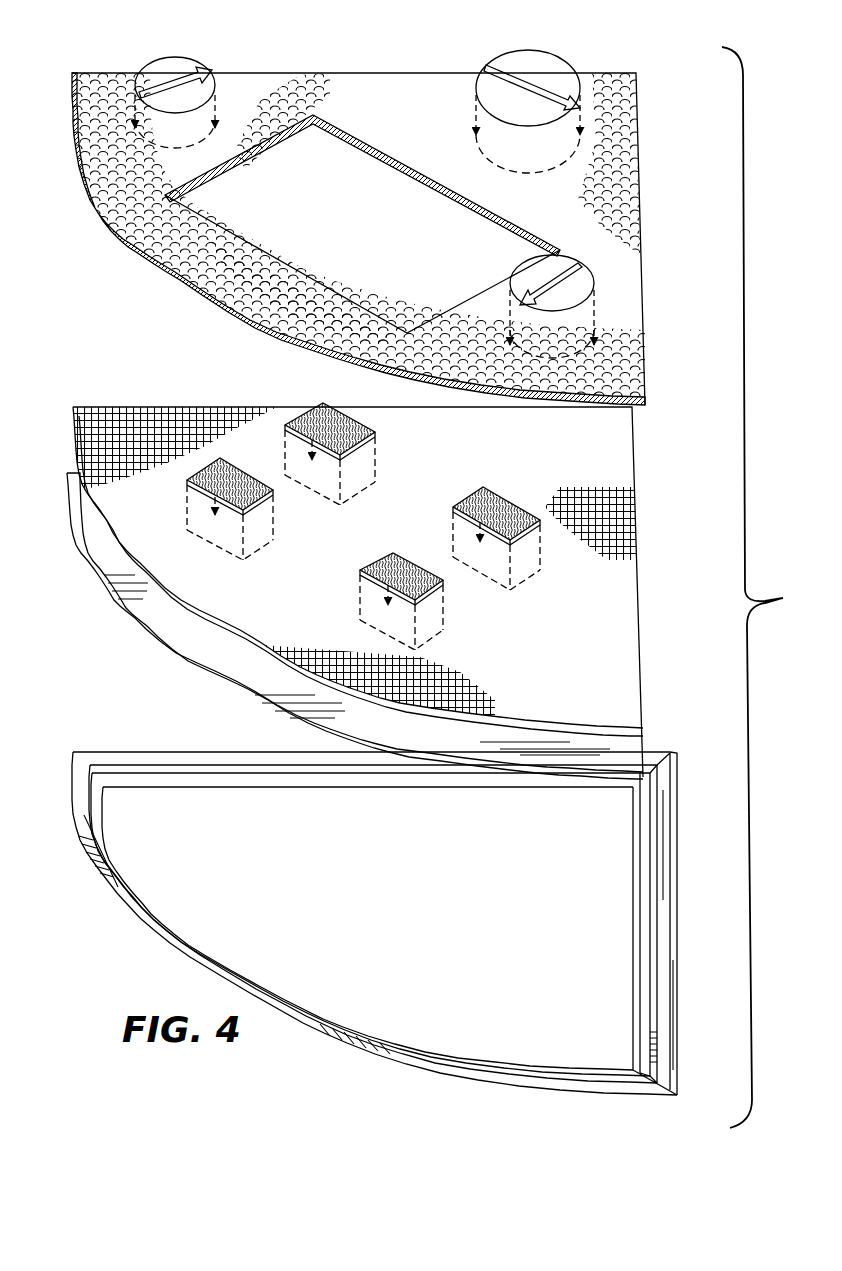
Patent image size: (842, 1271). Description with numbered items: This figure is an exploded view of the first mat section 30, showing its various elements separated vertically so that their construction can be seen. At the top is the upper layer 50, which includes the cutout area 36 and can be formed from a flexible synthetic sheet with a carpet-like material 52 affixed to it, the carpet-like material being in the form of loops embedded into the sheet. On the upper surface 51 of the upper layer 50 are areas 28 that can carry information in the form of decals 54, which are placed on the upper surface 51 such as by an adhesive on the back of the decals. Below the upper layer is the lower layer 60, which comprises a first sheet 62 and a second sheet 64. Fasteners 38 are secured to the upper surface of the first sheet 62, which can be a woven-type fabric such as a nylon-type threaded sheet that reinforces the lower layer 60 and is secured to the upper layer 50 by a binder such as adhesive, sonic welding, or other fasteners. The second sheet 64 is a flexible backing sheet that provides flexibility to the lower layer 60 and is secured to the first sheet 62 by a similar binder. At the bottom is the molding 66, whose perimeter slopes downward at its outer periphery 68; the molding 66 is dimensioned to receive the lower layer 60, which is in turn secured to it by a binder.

The first mat section 30 is at (798, 593).
The upper layer 50 is at (395, 215).
The carpet-like material 52 is at (143, 235).
The cutout area 36 is at (365, 160).
The decals 54 is at (175, 58).
The upper surface 51 is at (435, 115).
The areas 28 is at (210, 166).
The lower layer 60 is at (58, 497).
The first sheet 62 is at (130, 538).
The second sheet 64 is at (152, 616).
The fasteners 38 is at (500, 497).
The molding 66 is at (374, 928).
The outer periphery 68 is at (312, 1005).